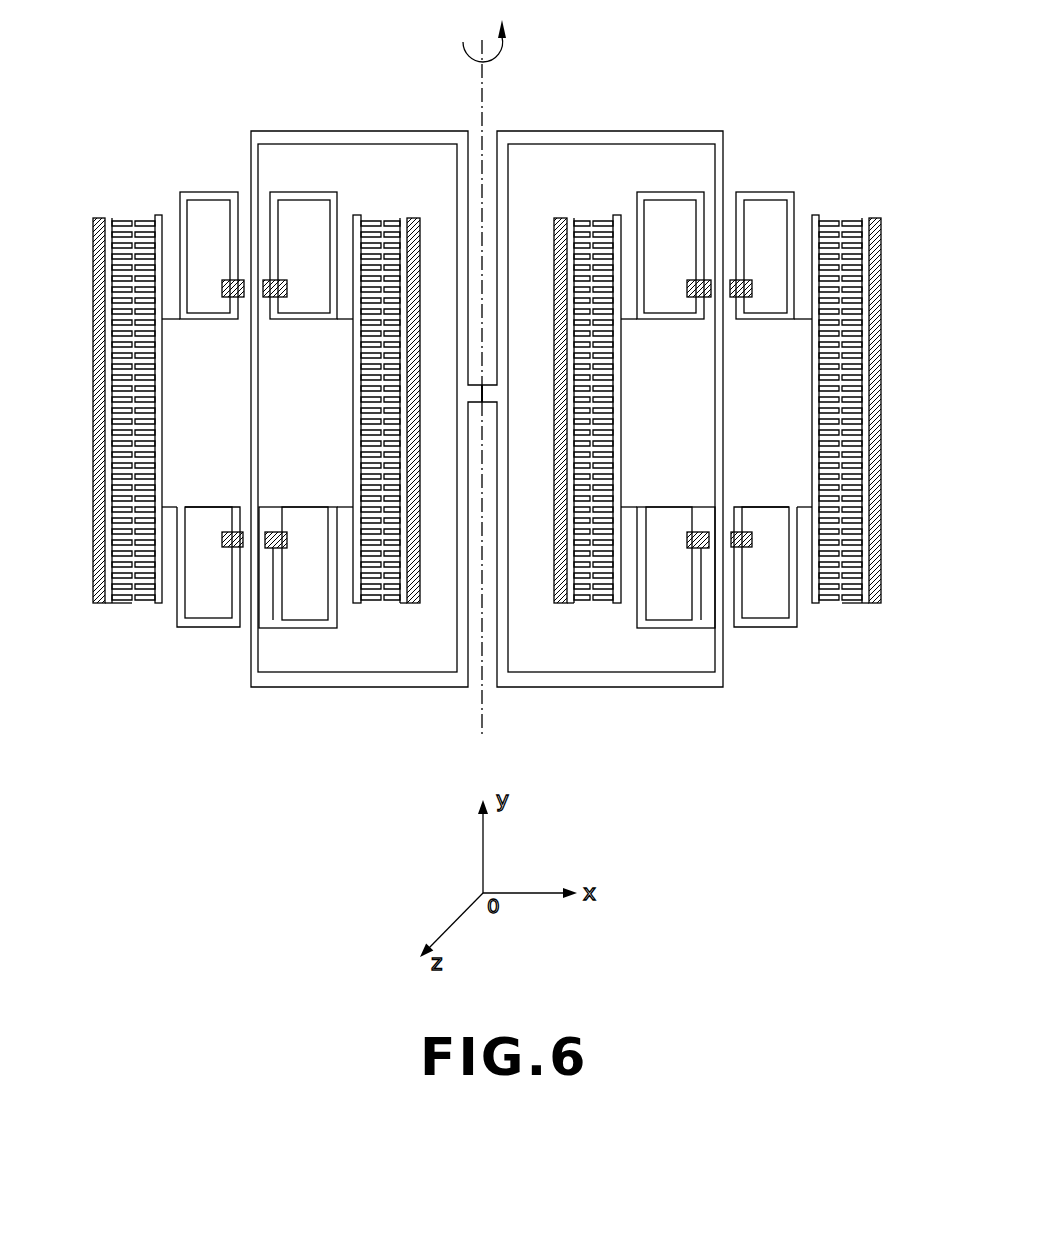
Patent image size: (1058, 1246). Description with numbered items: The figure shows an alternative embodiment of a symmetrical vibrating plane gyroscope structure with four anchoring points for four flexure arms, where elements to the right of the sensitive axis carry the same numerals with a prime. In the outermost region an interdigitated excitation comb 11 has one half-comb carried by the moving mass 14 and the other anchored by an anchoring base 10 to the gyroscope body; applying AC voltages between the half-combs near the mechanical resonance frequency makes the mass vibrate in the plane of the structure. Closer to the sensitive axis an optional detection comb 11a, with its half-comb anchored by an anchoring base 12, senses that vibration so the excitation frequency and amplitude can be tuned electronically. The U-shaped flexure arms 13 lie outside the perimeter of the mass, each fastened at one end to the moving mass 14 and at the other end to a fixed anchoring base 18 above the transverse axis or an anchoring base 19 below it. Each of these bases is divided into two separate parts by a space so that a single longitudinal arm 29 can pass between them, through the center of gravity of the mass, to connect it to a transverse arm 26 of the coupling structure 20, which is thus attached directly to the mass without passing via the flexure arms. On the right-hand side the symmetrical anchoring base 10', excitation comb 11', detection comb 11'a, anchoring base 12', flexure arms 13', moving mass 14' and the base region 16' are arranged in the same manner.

The anchoring base 10 is at (74, 401).
The interdigitated comb 11 is at (142, 379).
The interdigitated comb 11a is at (393, 220).
The anchoring base 12 is at (433, 386).
The flexure arm 13 is at (257, 404).
The moving mass 14 is at (215, 529).
The anchoring base 18 is at (275, 285).
The anchoring base 19 is at (240, 546).
The coupling structure 20 is at (468, 708).
The transverse arm 26 is at (370, 130).
The longitudinal arm 29 is at (256, 160).
The anchoring base 10' is at (909, 393).
The interdigitated comb 11' is at (845, 379).
The interdigitated comb 11'a is at (608, 380).
The anchoring base 12' is at (542, 385).
The flexure arm 13' is at (718, 404).
The moving mass 14' is at (702, 532).
The contact pad (right) 16' is at (719, 409).